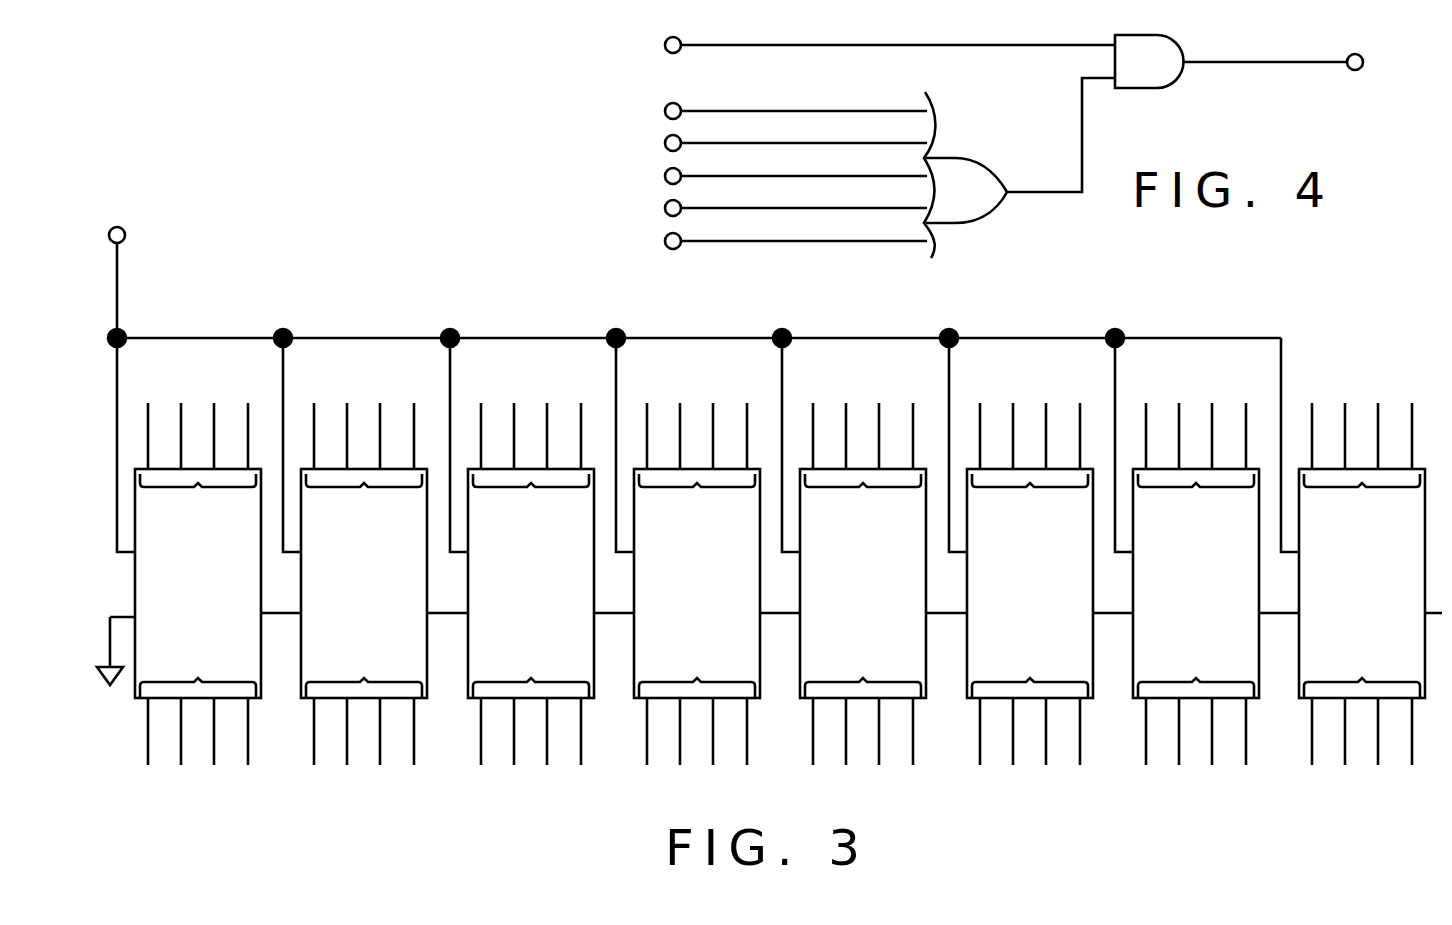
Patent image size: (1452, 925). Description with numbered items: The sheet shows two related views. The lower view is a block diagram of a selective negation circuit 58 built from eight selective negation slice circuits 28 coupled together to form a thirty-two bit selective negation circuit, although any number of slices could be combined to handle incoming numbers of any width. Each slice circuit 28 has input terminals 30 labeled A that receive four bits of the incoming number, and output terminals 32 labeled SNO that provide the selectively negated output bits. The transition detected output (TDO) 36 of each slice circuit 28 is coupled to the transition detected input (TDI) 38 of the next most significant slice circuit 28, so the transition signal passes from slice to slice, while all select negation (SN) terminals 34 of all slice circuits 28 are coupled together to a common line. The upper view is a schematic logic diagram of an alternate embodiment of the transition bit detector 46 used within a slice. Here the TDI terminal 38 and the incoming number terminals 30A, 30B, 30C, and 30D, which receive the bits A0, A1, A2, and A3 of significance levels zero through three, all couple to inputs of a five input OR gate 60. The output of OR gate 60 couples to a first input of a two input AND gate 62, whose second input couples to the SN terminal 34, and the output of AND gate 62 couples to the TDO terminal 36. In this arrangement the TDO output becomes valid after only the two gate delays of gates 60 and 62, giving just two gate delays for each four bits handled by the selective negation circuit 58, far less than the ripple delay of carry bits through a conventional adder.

In FIG. 3, the selective negation slice circuit 28 is at (132, 700).
In FIG. 3, the input terminals 30 is at (747, 425).
In FIG. 4, the input terminal A0 30A is at (665, 143).
In FIG. 4, the input terminal A1 30B is at (665, 176).
In FIG. 4, the input terminal A2 30C is at (665, 208).
In FIG. 4, the input terminal A3 30D is at (665, 241).
In FIG. 3, the output terminals 32 is at (314, 737).
In FIG. 3, the select negation terminal 34 is at (127, 553).
In FIG. 4, the select negation terminal 34 is at (665, 45).
In FIG. 3, the transition detected output terminal 36 is at (261, 615).
In FIG. 4, the transition detected output terminal 36 is at (1355, 70).
In FIG. 3, the transition detected input terminal 38 is at (123, 620).
In FIG. 4, the transition detected input terminal 38 is at (665, 111).
In FIG. 4, the transition bit detector 46 is at (1304, 147).
In FIG. 3, the selective negation circuit 58 is at (597, 846).
In FIG. 4, the OR gate 60 is at (960, 223).
In FIG. 4, the AND gate 62 is at (1140, 88).